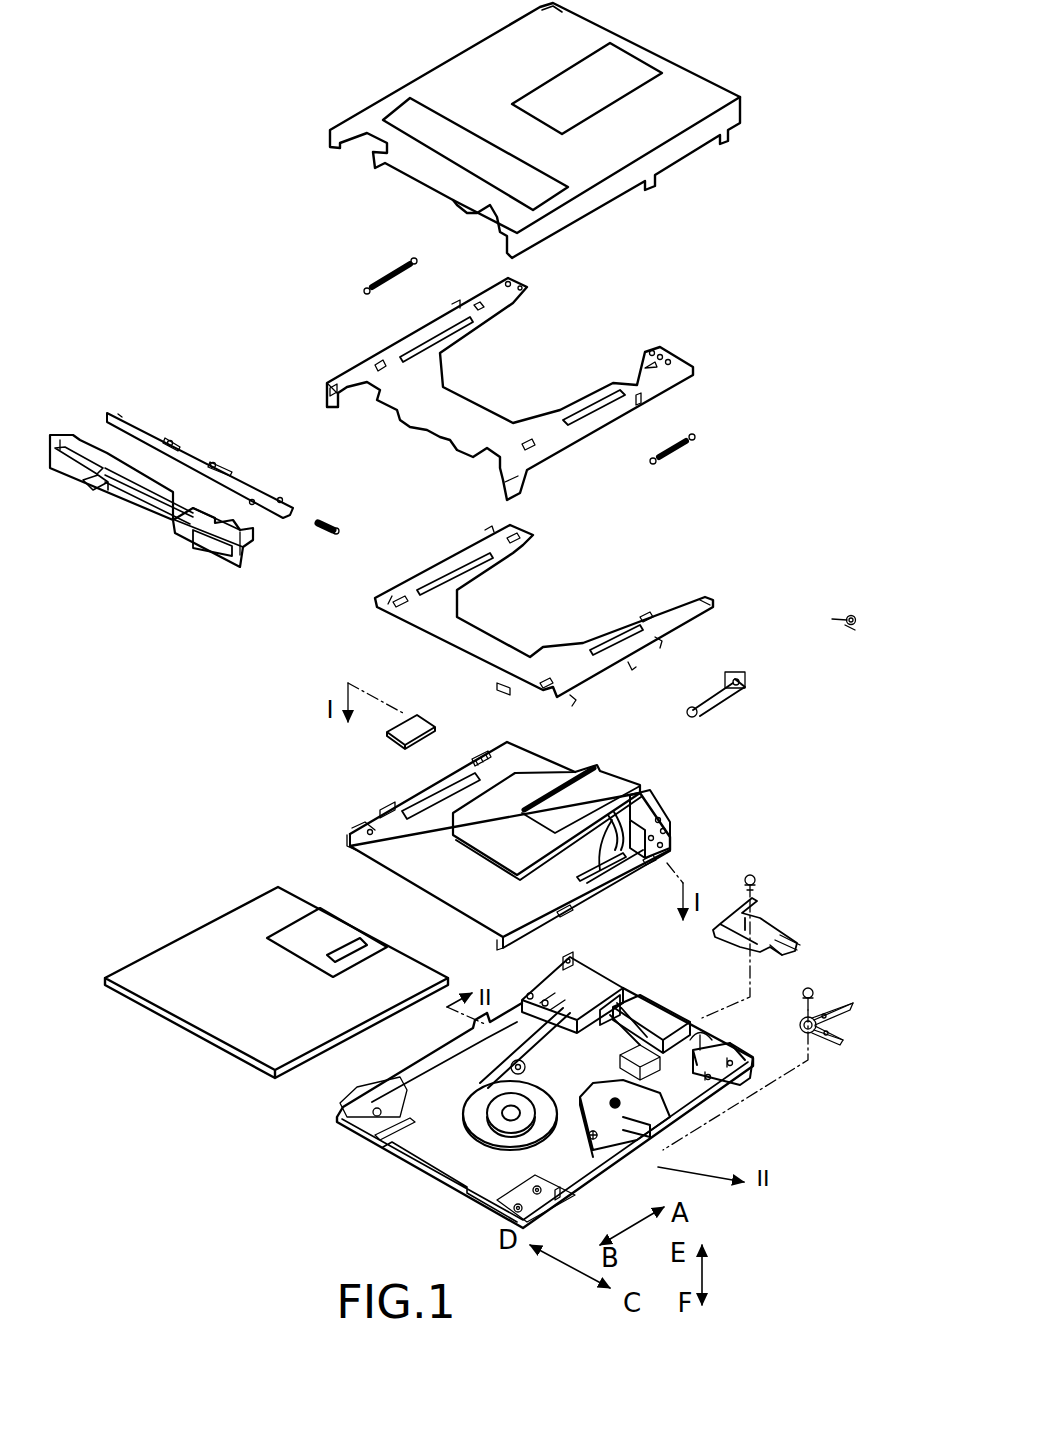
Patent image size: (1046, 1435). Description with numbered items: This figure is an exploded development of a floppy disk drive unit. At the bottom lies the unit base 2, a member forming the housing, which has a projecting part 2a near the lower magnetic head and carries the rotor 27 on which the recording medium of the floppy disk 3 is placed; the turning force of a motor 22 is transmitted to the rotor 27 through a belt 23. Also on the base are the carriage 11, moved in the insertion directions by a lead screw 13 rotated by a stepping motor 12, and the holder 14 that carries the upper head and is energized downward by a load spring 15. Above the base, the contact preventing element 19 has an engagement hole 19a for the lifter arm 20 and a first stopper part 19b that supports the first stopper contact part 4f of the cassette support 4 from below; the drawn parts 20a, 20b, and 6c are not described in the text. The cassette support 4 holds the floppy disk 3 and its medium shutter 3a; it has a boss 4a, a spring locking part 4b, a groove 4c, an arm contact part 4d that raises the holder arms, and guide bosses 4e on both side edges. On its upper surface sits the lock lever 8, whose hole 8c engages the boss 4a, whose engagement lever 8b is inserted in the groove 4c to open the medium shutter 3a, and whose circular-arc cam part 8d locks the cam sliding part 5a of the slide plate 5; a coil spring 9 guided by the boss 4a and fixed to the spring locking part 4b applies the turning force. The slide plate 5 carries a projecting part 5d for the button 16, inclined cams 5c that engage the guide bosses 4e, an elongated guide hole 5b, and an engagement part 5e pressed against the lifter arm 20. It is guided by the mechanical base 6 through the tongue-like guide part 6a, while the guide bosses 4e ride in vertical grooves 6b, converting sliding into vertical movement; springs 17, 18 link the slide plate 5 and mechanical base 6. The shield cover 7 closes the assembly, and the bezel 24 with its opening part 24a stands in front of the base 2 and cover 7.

The unit base 2 is at (577, 1180).
The projecting part 2a is at (622, 1103).
The floppy disk 3 is at (223, 1020).
The medium shutter 3a is at (305, 930).
The cassette support 4 is at (460, 873).
The boss 4a is at (666, 832).
The spring locking part 4b is at (660, 820).
The groove 4c is at (603, 832).
The arm contact part 4d is at (603, 763).
The guide boss 4e is at (480, 760).
The first stopper contact part 4f is at (643, 795).
The slide plate 5 is at (453, 633).
The cam sliding part 5a is at (705, 597).
The guide hole 5b is at (527, 537).
The inclined cam 5c is at (488, 532).
The projecting part 5d is at (497, 688).
The engagement part 5e is at (630, 667).
The mechanical base 6 is at (405, 405).
The guide part 6a is at (378, 367).
The vertical groove 6b is at (453, 298).
The lock frame bent portions 6c is at (327, 385).
The shield cover 7 is at (457, 158).
The lock lever 8 is at (733, 700).
The engagement lever 8b is at (692, 712).
The hole 8c is at (742, 683).
The cam part 8d is at (733, 672).
The coil spring 9 is at (851, 615).
The carriage 11 is at (650, 1030).
The stepping motor 12 is at (700, 1033).
The lead screw 13 is at (700, 1087).
The holder 14 is at (560, 1030).
The load spring 15 is at (625, 1025).
The button 16 is at (395, 737).
The spring 17 is at (378, 262).
The spring 18 is at (690, 440).
The contact preventing element 19 is at (783, 920).
The engagement hole 19a is at (797, 943).
The first stopper part 19b is at (755, 900).
The lifter arm 20 is at (830, 1023).
The lock arm lower claw 20a is at (843, 1043).
The lock arm upper claw 20b is at (852, 1005).
The motor 22 is at (577, 983).
The belt 23 is at (505, 1050).
The bezel 24 is at (213, 535).
The opening part 24a is at (138, 488).
The rotor 27 is at (493, 1117).